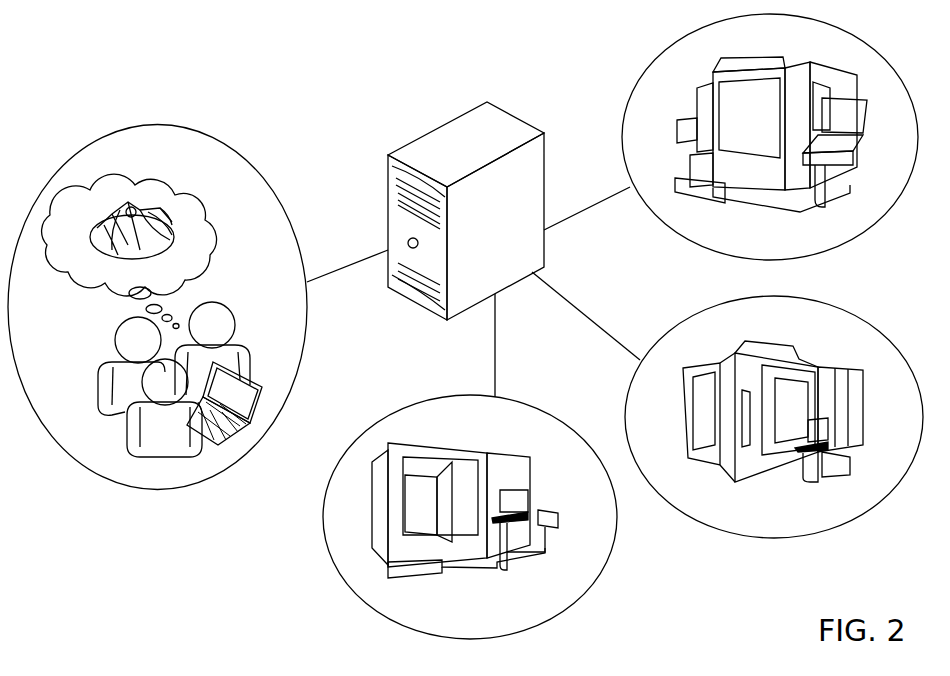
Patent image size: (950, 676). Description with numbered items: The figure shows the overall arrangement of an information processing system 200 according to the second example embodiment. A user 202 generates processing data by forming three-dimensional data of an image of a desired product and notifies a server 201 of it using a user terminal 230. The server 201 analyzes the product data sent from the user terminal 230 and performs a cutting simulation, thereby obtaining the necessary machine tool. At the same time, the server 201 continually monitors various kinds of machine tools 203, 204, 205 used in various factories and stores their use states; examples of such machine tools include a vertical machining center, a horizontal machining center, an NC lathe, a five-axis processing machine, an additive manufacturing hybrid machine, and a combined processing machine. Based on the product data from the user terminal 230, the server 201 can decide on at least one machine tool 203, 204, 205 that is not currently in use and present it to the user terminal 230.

The information processing system 200 is at (88, 83).
The server 201 is at (438, 133).
The user 202 is at (152, 457).
The user terminal 230 is at (235, 447).
The machine tool 203 is at (830, 77).
The machine tool 204 is at (862, 368).
The machine tool 205 is at (520, 462).